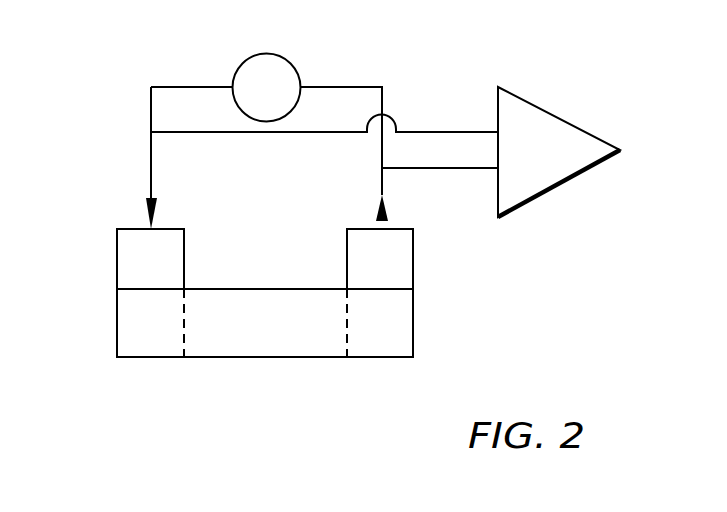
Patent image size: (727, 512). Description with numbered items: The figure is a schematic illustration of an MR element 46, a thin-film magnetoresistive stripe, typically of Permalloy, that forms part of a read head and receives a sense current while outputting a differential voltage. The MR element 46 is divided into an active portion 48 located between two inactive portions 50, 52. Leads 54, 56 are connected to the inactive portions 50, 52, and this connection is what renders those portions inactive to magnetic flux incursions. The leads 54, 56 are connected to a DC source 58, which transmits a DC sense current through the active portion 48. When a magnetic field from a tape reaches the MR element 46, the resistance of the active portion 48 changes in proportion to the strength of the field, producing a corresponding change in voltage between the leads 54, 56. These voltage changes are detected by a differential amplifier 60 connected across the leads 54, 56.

The MR element 46 is at (209, 380).
The active portion 48 is at (260, 345).
The inactive portion 50 is at (152, 345).
The inactive portion 52 is at (378, 345).
The lead 54 is at (122, 269).
The lead 56 is at (403, 268).
The DC source 58 is at (290, 61).
The differential amplifier 60 is at (588, 128).